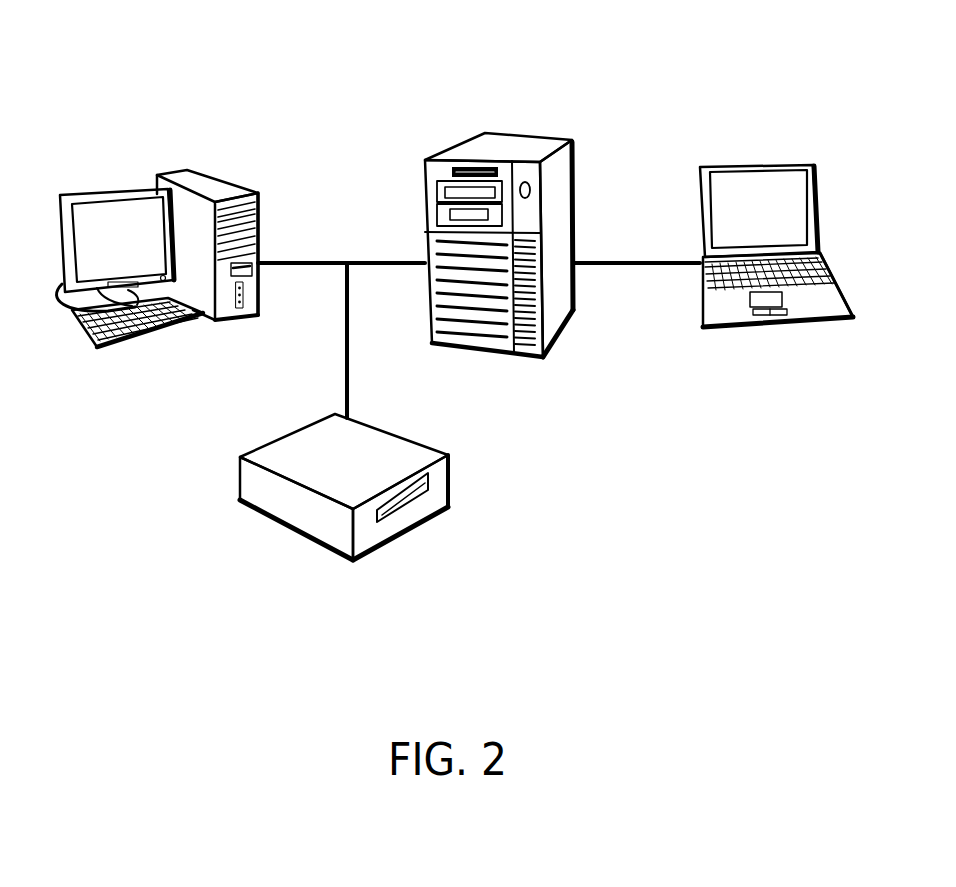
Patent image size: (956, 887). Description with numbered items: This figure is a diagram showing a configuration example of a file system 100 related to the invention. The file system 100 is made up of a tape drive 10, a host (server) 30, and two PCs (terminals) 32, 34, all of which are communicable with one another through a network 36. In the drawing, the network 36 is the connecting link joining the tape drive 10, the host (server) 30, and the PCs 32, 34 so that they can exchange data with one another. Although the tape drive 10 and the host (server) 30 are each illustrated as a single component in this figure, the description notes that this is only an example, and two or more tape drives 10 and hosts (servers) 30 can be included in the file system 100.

The file system 100 is at (422, 52).
The tape drive 10 is at (417, 527).
The host (server) 30 is at (543, 141).
The PC (terminal) 32 is at (222, 186).
The PC (terminal) 34 is at (733, 166).
The network 36 is at (347, 357).